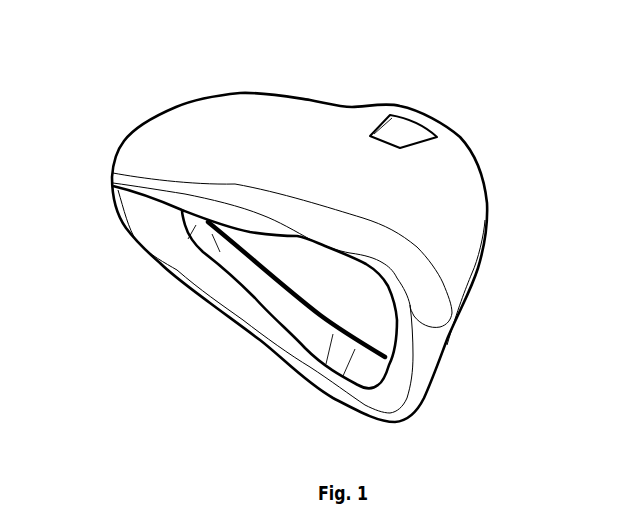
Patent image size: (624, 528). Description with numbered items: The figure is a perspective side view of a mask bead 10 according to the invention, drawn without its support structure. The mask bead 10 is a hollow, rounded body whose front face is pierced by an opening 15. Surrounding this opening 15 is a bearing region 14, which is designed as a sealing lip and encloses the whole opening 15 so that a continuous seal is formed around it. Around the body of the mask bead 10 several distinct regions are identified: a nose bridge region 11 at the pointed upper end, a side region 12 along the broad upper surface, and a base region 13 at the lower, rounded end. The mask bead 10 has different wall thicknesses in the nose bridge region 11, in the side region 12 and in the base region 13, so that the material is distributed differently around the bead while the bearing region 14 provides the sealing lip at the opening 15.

The mask bead 10 is at (201, 97).
The nose bridge region 11 is at (108, 170).
The side region 12 is at (354, 165).
The base region 13 is at (427, 365).
The bearing region 14 is at (304, 363).
The opening 15 is at (326, 291).